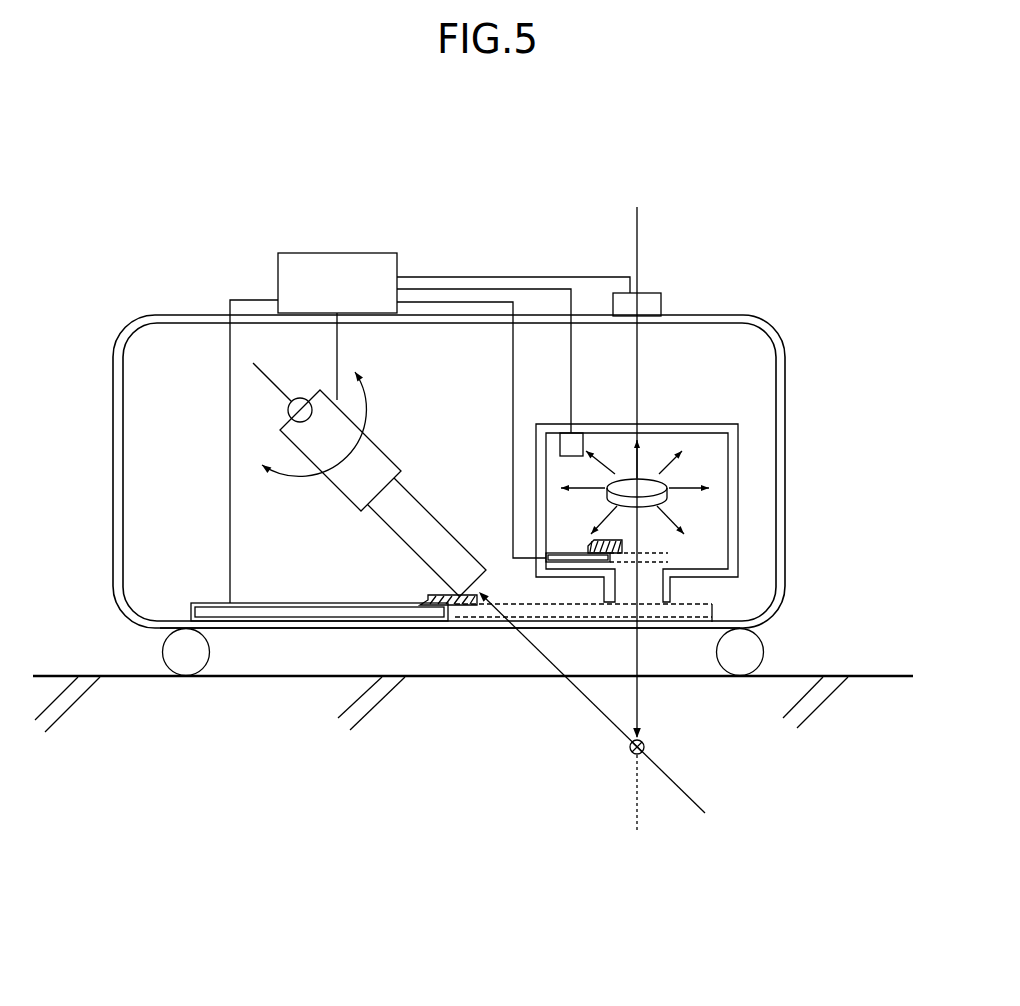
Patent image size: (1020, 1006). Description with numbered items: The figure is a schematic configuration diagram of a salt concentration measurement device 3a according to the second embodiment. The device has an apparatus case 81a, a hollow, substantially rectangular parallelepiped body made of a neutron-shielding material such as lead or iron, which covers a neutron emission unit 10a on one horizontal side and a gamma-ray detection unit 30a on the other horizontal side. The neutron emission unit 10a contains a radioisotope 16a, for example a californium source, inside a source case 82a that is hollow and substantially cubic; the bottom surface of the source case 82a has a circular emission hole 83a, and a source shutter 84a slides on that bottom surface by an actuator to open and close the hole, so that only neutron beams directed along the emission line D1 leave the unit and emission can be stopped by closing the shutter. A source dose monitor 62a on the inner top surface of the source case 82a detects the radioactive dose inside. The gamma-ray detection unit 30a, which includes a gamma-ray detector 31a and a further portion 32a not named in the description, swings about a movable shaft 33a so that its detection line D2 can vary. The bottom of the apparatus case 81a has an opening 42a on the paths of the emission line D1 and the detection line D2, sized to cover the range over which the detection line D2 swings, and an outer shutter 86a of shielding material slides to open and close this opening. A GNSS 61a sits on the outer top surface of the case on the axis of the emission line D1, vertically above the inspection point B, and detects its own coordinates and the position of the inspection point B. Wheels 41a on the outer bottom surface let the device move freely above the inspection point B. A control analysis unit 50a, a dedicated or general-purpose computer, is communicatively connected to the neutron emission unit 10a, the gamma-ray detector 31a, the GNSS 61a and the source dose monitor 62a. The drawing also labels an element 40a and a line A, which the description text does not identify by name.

The salt concentration measurement device 3a is at (560, 208).
The control analysis unit 50a is at (340, 253).
The GNSS 61a is at (650, 293).
The housing 40a is at (785, 316).
The apparatus case 81a is at (786, 394).
The neutron emission unit 10a is at (717, 402).
The source case 82a is at (739, 487).
The radioisotope 16a is at (645, 479).
The source dose monitor 62a is at (576, 432).
The source shutter 84a is at (567, 552).
The emission hole 83a is at (655, 606).
The movable shaft 33a is at (301, 397).
The gamma-ray detector 31a is at (364, 433).
The gamma-ray detection unit 30a is at (415, 458).
The irradiation tube 32a is at (438, 521).
The outer shutter 86a is at (272, 603).
The wheels 41a is at (795, 652).
The opening 42a is at (472, 628).
The ground surface A is at (885, 675).
The inspection point B is at (645, 746).
The emission line D1 is at (638, 531).
The detection line D2 is at (605, 716).